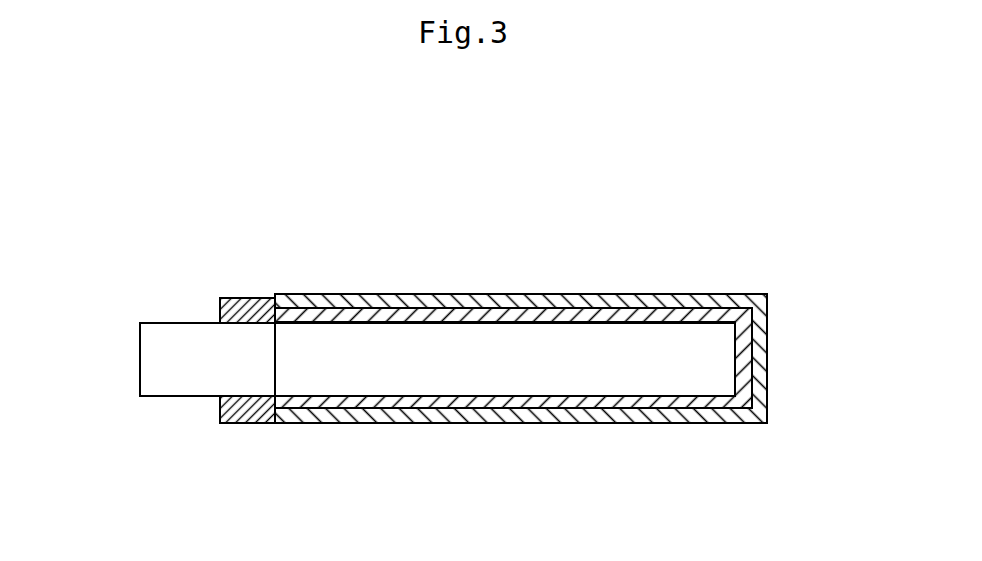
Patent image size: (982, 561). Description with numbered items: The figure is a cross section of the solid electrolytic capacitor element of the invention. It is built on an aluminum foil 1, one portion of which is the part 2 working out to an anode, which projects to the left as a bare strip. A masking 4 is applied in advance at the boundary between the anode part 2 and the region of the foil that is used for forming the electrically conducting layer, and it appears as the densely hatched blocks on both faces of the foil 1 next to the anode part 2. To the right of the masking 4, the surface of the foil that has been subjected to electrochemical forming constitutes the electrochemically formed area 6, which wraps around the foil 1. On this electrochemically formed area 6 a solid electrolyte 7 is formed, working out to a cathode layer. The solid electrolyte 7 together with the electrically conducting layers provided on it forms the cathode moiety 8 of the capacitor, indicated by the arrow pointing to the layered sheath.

The aluminum foil 1 is at (188, 378).
The part working out to an anode 2 is at (152, 302).
The masking 4 is at (245, 307).
The electrochemically formed area 6 is at (337, 315).
The solid electrolyte 7 is at (445, 302).
The cathode moiety 8 is at (670, 272).